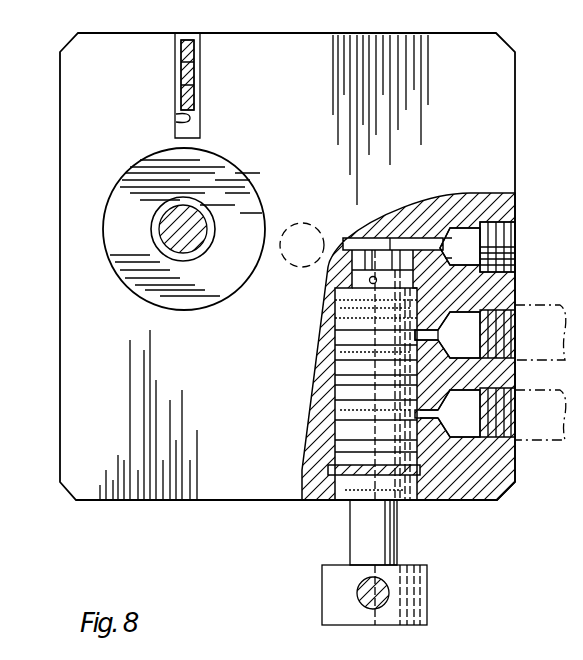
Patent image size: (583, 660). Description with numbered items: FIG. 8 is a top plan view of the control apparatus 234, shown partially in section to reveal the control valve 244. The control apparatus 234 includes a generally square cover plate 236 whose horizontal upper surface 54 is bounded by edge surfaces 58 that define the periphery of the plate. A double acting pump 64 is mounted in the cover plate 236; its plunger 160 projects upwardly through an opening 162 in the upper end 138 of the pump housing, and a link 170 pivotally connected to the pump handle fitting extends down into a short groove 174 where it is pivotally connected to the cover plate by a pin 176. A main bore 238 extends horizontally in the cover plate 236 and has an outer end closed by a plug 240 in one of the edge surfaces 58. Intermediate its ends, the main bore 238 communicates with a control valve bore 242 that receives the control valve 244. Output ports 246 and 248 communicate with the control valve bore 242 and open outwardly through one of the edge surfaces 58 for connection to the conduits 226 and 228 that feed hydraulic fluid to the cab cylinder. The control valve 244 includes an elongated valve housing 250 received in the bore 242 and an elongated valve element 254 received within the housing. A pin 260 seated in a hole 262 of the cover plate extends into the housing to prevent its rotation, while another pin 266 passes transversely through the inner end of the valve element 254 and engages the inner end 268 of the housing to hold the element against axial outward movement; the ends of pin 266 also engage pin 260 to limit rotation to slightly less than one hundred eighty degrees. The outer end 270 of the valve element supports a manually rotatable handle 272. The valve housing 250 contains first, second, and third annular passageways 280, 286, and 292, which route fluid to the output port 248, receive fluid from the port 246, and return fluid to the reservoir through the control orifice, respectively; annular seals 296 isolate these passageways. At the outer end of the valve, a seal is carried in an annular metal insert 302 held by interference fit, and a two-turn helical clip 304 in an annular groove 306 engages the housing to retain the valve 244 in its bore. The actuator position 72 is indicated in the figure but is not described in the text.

The upper surface 54 is at (170, 500).
The edge surfaces 58 is at (398, 33).
The pump 64 is at (138, 303).
The actuator location 72 is at (298, 226).
The upper end of upper pump housing portion 138 is at (145, 187).
The plunger 160 is at (165, 233).
The opening 162 is at (190, 206).
The link 170 is at (194, 47).
The groove 174 is at (180, 119).
The pin 176 is at (197, 77).
The conduit 226 is at (537, 305).
The conduit 228 is at (538, 440).
The control apparatus 234 is at (515, 91).
The cover plate 236 is at (86, 490).
The main bore 238 is at (392, 238).
The plug 240 is at (518, 240).
The control valve bore 242 is at (350, 362).
The control valve 244 is at (335, 338).
The output port 246 is at (484, 330).
The output port 248 is at (515, 392).
The valve housing 250 is at (350, 395).
The valve element 254 is at (348, 279).
The pin 260 is at (425, 228).
The hole 262 is at (467, 246).
The pin 266 is at (373, 276).
The inner end of valve housing 268 is at (303, 245).
The outer end of valve element 270 is at (405, 548).
The handle 272 is at (410, 603).
The first annular passageway 280 is at (350, 420).
The second annular passageway 286 is at (432, 340).
The third annular passageway 292 is at (350, 370).
The annular seals 296 is at (350, 318).
The annular metal insert 302 is at (358, 506).
The helical clip 304 is at (421, 470).
The annular groove 306 is at (335, 496).